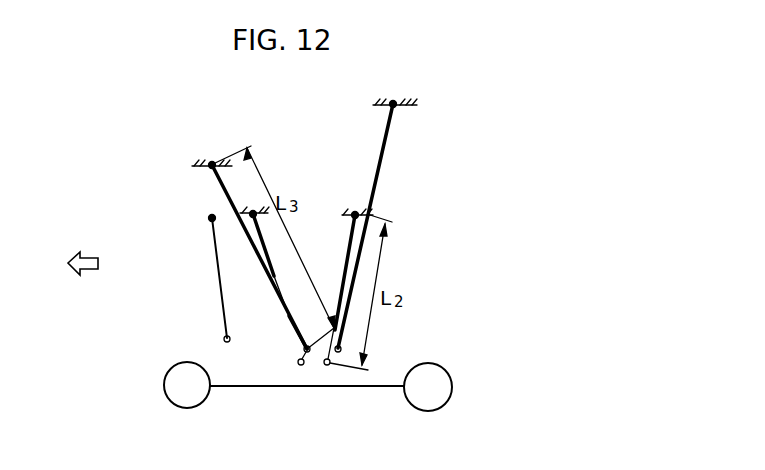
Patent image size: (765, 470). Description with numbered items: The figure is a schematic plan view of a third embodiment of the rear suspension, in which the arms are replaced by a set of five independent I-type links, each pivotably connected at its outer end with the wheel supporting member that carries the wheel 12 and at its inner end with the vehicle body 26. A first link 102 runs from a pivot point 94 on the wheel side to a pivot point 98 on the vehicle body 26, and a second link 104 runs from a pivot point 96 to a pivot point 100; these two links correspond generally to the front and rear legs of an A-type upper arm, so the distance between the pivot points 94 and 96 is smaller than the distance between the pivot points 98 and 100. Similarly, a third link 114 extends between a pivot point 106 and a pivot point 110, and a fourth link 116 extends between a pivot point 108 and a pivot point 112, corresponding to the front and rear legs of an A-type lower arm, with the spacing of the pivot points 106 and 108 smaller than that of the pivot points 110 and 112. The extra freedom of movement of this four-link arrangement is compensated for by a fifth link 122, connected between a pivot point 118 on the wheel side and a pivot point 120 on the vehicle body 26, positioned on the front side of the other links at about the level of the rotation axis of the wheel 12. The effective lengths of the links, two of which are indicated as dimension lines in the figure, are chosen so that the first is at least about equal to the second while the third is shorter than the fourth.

The wheel 12 is at (414, 408).
The vehicle body 26 is at (212, 163).
The pivot point 94 is at (298, 362).
The pivot point 96 is at (328, 365).
The pivot point 98 is at (253, 216).
The pivot point 100 is at (355, 212).
The first link 102 is at (288, 325).
The second link 104 is at (346, 272).
The pivot point 106 is at (303, 348).
The pivot point 108 is at (341, 349).
The pivot point 110 is at (212, 167).
The pivot point 112 is at (394, 107).
The third link 114 is at (228, 200).
The fourth link 116 is at (379, 172).
The pivot point 118 is at (224, 338).
The pivot point 120 is at (211, 219).
The fifth link 122 is at (222, 290).